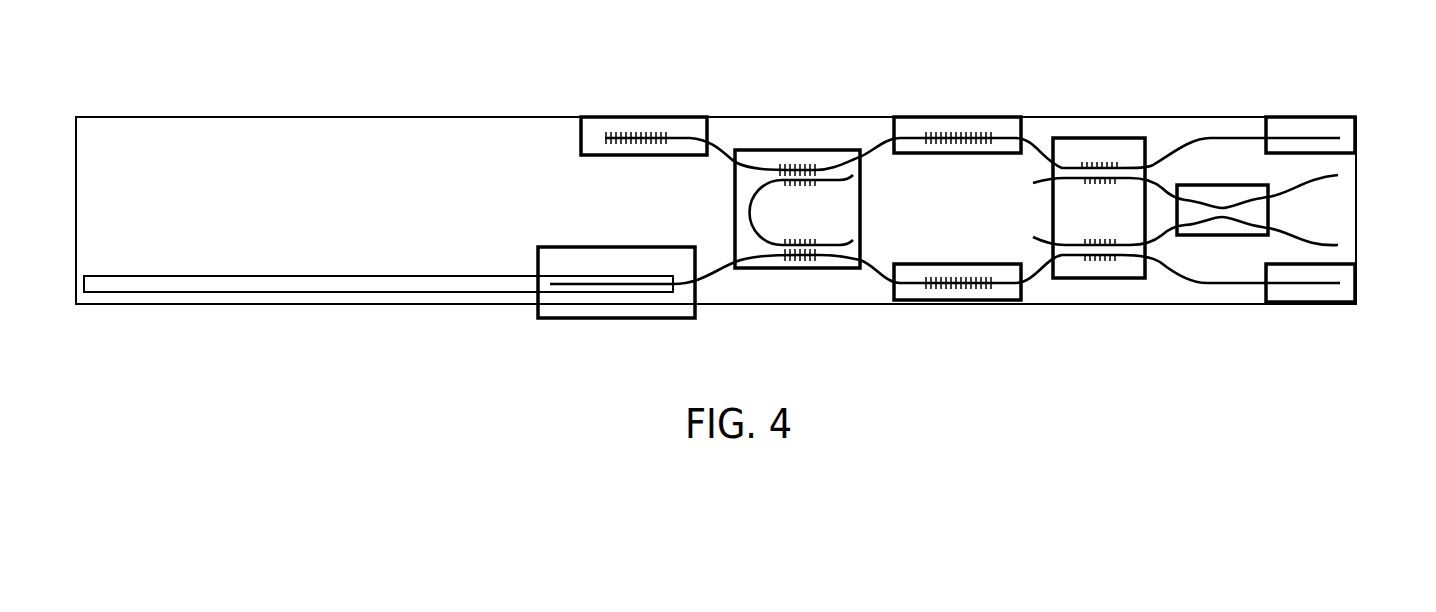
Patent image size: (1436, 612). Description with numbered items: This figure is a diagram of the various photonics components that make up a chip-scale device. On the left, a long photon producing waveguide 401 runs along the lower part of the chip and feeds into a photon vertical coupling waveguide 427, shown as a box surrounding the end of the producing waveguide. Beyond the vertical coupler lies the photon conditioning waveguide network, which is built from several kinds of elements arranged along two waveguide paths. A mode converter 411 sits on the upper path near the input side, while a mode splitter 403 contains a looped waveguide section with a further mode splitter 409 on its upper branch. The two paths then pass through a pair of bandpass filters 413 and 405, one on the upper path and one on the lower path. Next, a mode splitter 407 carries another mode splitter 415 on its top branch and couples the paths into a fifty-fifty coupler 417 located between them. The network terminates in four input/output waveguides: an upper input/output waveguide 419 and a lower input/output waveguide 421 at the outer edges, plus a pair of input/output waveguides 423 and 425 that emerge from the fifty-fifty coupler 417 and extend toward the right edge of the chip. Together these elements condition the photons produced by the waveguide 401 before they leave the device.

The photon producing waveguide 401 is at (332, 276).
The photon vertical coupling waveguide 427 is at (571, 247).
The mode converter 411 is at (643, 117).
The mode splitter 409 is at (806, 168).
The mode splitter 403 is at (797, 214).
The bandpass filter 413 is at (962, 138).
The bandpass filter 405 is at (957, 281).
The mode splitter 415 is at (1098, 168).
The mode splitter 407 is at (1109, 214).
The 50/50 coupler 417 is at (1218, 186).
The input/output waveguide 419 is at (1318, 117).
The input/output waveguide 421 is at (1305, 302).
The input/output waveguide 423 is at (1323, 181).
The input/output waveguide 425 is at (1323, 241).